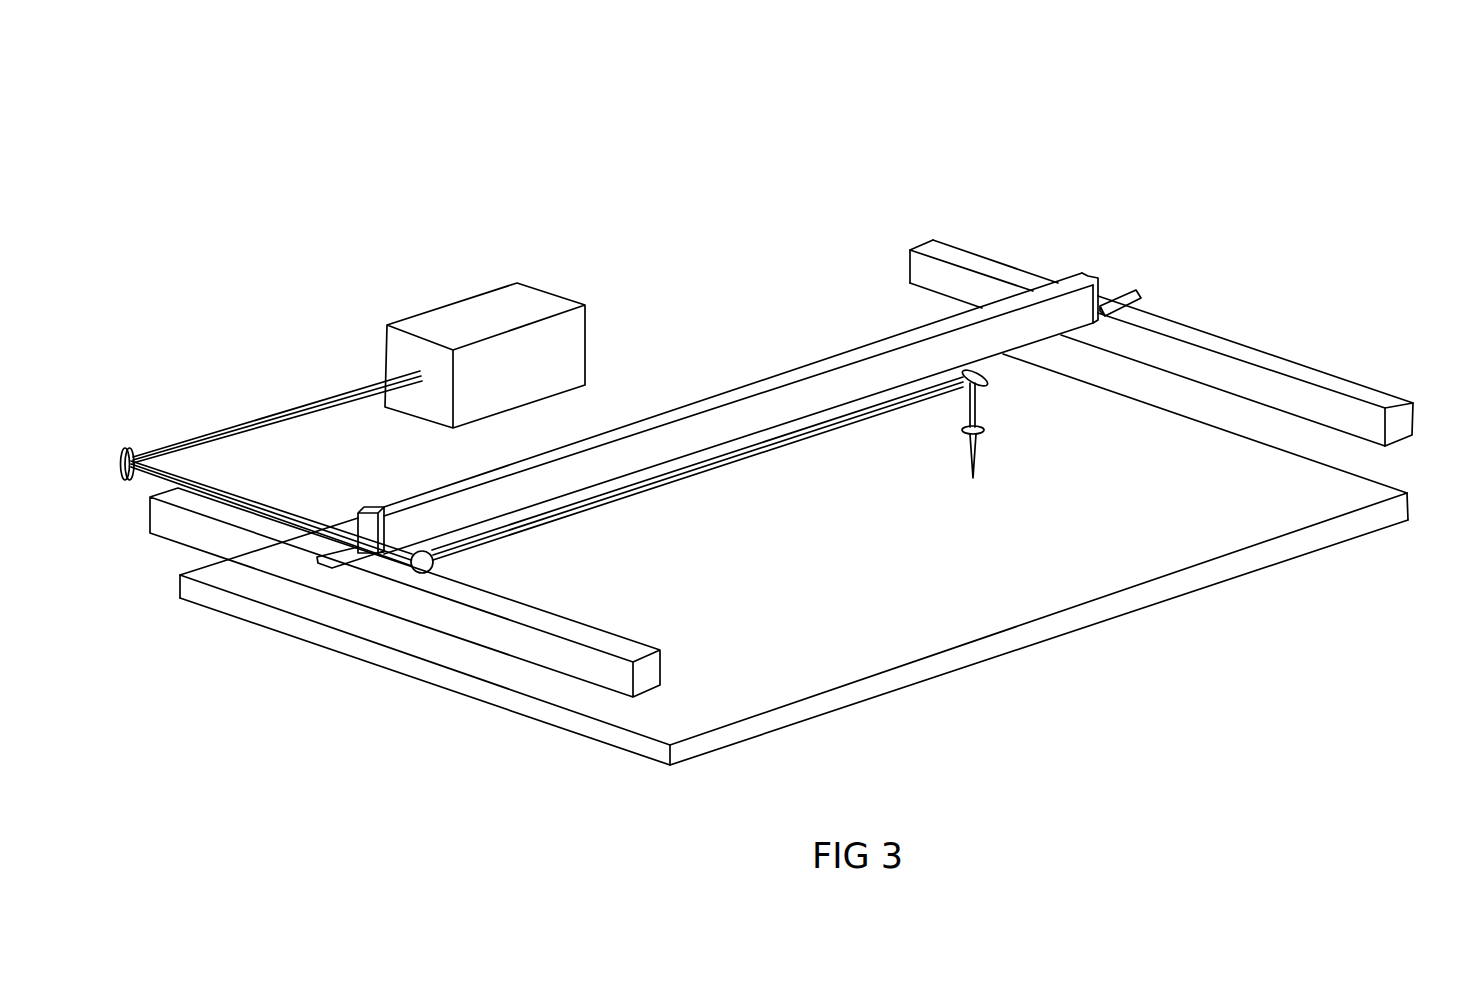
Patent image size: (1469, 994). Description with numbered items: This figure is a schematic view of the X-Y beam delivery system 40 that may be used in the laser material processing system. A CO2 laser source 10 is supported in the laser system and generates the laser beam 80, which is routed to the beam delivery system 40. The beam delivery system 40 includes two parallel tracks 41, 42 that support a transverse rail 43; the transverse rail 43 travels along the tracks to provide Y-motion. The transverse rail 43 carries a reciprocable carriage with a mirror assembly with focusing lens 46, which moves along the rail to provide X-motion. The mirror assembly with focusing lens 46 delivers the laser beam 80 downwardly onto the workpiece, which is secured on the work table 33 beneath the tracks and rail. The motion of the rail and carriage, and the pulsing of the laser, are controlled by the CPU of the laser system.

The CO2 laser source 10 is at (482, 312).
The work table 33 is at (1060, 635).
The X-Y beam delivery system 40 is at (1097, 140).
The parallel track 41 is at (1253, 385).
The parallel track 42 is at (555, 645).
The transverse rail 43 is at (792, 397).
The mirror assembly with focusing lens 46 is at (985, 430).
The laser beam 80 is at (672, 483).